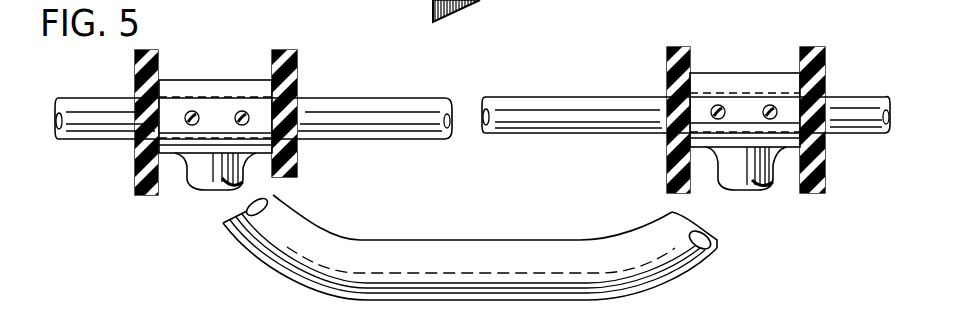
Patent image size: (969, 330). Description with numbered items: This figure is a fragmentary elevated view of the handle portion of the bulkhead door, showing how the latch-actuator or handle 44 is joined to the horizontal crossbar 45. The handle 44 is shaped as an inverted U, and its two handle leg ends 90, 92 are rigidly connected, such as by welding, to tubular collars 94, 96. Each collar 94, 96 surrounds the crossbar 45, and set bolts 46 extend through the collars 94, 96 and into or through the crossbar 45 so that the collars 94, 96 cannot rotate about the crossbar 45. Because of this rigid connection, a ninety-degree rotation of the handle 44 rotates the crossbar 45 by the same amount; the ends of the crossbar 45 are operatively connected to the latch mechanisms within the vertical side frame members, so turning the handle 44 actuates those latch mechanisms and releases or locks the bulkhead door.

The latch-actuator or handle 44 is at (447, 268).
The crossbar 45 is at (100, 108).
The set bolts 46 is at (768, 106).
The handle leg end 90 is at (203, 173).
The handle leg end 92 is at (735, 177).
The tubular collar 94 is at (172, 90).
The tubular collar 96 is at (237, 110).